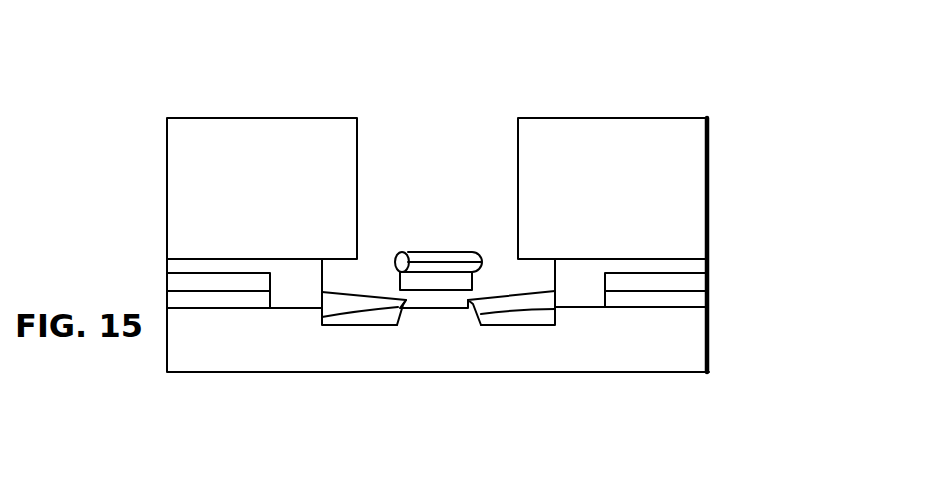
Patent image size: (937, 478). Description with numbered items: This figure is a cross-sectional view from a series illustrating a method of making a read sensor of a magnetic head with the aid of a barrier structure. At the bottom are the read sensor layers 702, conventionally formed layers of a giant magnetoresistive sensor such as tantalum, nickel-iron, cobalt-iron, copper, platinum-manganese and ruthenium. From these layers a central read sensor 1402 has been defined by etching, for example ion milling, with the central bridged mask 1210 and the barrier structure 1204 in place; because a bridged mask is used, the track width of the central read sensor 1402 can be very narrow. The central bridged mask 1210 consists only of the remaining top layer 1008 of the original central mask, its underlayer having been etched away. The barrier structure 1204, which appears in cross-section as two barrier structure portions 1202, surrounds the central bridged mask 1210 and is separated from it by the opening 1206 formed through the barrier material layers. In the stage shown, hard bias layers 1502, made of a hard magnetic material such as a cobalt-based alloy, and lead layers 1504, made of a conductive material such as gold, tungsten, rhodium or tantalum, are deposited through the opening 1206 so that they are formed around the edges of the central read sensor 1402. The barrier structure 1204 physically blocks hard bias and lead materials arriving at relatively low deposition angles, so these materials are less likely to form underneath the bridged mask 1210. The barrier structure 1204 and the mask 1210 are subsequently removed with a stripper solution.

The read sensor layers 702 is at (710, 342).
The barrier structure portions 1202 is at (158, 122).
The barrier structure 1204 is at (603, 107).
The opening 1206 is at (441, 150).
The central bridged mask 1210 is at (408, 257).
The top layer 1008 is at (477, 284).
The hard bias layers 1502 is at (347, 321).
The lead layers 1504 is at (381, 304).
The central read sensor 1402 is at (432, 316).